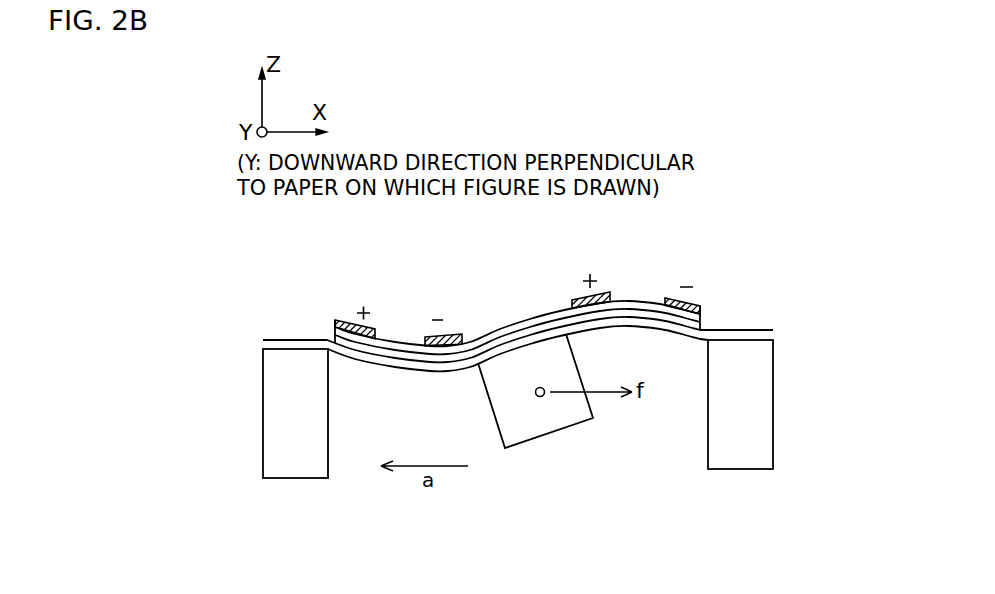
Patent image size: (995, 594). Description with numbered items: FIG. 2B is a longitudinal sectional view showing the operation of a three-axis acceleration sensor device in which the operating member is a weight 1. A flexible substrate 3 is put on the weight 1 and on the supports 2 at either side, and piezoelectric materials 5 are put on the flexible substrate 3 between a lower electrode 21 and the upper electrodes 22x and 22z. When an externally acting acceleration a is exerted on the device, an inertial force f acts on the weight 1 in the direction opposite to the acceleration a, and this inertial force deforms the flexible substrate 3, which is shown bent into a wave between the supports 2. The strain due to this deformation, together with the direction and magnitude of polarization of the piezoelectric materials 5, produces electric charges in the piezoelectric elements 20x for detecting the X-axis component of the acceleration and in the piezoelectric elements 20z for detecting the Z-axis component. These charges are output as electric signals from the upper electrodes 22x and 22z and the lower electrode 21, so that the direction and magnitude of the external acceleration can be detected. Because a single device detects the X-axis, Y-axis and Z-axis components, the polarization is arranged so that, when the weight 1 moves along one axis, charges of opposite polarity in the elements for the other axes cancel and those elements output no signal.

The weight 1 is at (552, 423).
The supports 2 is at (272, 417).
The flexible substrate 3 is at (525, 315).
The piezoelectric materials 5 is at (334, 338).
The piezoelectric element for detecting the X-axis component 20x is at (347, 306).
The piezoelectric element for detecting the Z-axis component 20z is at (559, 283).
The lower electrode 21 is at (331, 342).
The upper electrode 22x is at (334, 322).
The upper electrode 22z is at (574, 308).